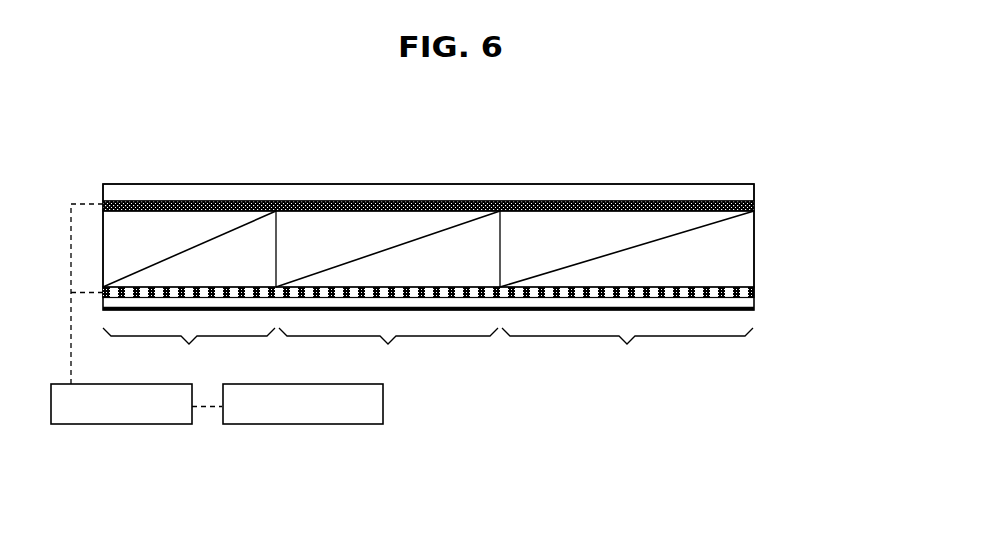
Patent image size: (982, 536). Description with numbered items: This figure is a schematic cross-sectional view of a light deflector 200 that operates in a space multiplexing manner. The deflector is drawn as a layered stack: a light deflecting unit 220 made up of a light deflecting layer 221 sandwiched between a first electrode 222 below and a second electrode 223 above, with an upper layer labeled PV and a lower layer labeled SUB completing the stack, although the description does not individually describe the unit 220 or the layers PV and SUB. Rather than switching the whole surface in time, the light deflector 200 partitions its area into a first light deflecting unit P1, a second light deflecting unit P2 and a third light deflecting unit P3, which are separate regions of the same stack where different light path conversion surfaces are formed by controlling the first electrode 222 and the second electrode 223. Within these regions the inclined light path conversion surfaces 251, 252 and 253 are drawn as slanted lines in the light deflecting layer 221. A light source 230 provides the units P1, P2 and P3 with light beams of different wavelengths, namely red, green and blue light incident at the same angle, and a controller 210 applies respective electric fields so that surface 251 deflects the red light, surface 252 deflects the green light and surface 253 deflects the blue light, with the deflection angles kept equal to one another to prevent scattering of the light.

The light deflector 200 is at (751, 145).
The controller 210 is at (120, 425).
The display panel 220 is at (819, 202).
The light deflecting layer 221 is at (755, 241).
The first electrode 222 is at (755, 289).
The second electrode 223 is at (755, 206).
The light source 230 is at (303, 425).
The light path conversion surface 251 is at (206, 241).
The light path conversion surface 252 is at (403, 243).
The light path conversion surface 253 is at (640, 245).
The passivation layer PV is at (755, 192).
The substrate SUB is at (755, 305).
The first light deflecting unit P1 is at (189, 349).
The second light deflecting unit P2 is at (388, 349).
The third light deflecting unit P3 is at (627, 349).